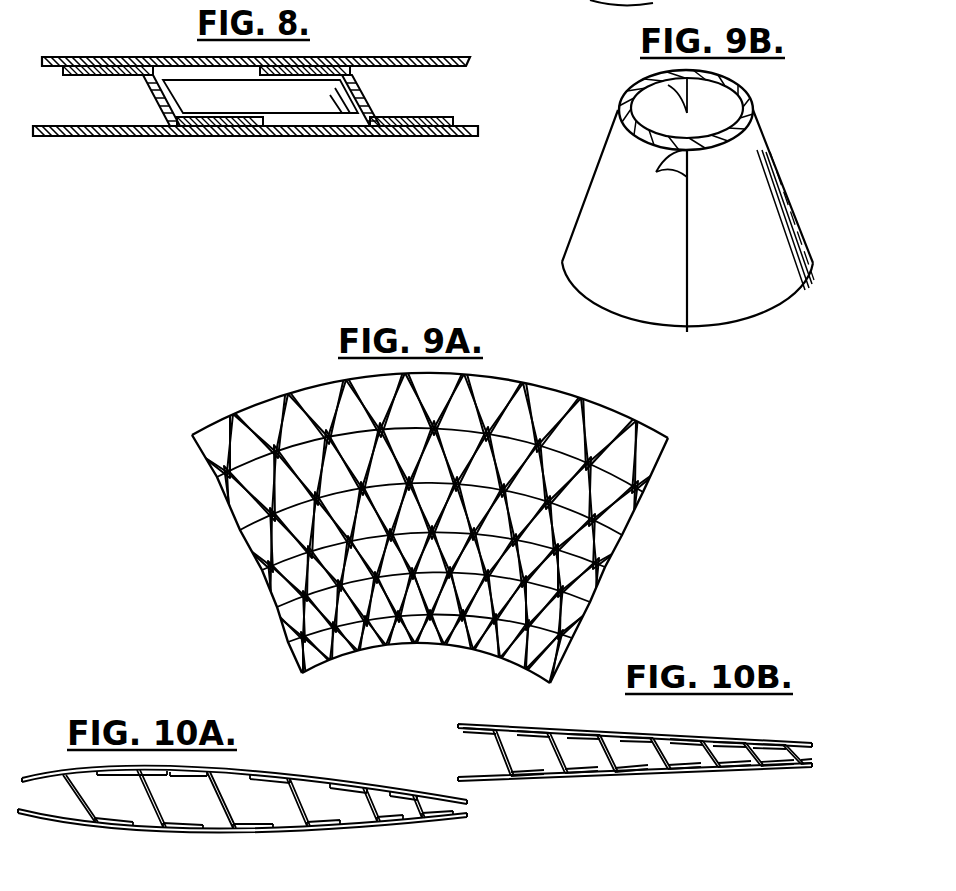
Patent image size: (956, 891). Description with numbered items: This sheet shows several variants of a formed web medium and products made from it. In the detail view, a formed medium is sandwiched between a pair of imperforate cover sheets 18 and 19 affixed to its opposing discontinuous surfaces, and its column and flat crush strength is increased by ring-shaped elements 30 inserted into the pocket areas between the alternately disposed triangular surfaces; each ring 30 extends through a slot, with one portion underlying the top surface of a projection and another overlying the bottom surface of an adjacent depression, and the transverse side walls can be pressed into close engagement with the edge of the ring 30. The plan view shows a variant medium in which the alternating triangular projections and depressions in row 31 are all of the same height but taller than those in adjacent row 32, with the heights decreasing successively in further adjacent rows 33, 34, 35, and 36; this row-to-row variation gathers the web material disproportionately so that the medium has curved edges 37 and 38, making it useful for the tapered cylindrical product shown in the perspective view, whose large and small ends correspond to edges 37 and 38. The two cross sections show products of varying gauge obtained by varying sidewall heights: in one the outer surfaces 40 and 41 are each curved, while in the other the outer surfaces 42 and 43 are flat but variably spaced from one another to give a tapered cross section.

In FIG. 8, the imperforate cover sheet 18 is at (425, 57).
In FIG. 8, the imperforate cover sheet 19 is at (428, 137).
In FIG. 8, the ring-shaped element 30 is at (300, 100).
In FIG. 9A, the row 31 is at (201, 458).
In FIG. 9A, the row 32 is at (227, 507).
In FIG. 9A, the row 33 is at (247, 558).
In FIG. 9A, the row 34 is at (264, 598).
In FIG. 9A, the row 35 is at (281, 633).
In FIG. 9A, the row 36 is at (296, 668).
In FIG. 9B, the curved edge 37 is at (673, 331).
In FIG. 9A, the curved edge 37 is at (490, 377).
In FIG. 9B, the curved edge 38 is at (753, 109).
In FIG. 9A, the curved edge 38 is at (430, 644).
In FIG. 10A, the curved outer surface 40 is at (290, 780).
In FIG. 10A, the curved outer surface 41 is at (307, 832).
In FIG. 10B, the flat outer surface 42 is at (627, 733).
In FIG. 10B, the flat outer surface 43 is at (603, 781).